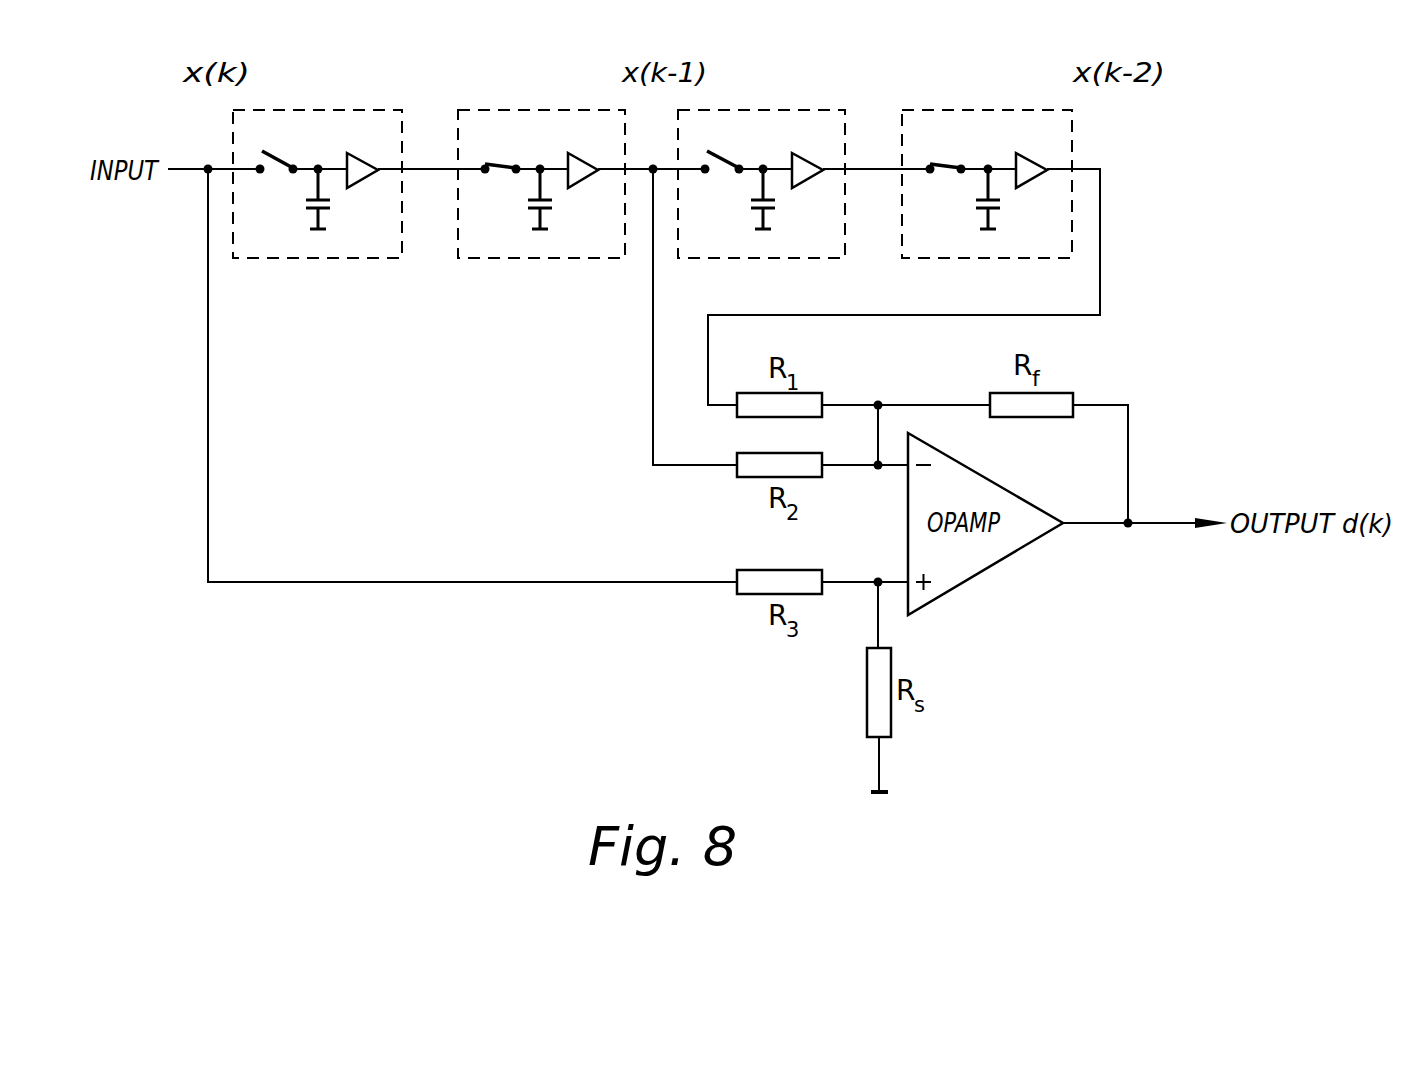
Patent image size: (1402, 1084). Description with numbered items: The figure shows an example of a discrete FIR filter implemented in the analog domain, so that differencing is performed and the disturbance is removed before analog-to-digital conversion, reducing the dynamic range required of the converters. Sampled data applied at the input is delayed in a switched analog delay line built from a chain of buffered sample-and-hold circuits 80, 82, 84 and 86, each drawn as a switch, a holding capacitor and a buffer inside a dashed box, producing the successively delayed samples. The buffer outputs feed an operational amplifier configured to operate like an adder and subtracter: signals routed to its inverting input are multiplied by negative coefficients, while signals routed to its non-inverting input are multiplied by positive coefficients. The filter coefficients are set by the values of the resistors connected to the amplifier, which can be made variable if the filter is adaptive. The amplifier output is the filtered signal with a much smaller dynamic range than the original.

The buffered sample-and-hold circuit 80 is at (323, 259).
The buffered sample-and-hold circuit 82 is at (530, 259).
The buffered sample-and-hold circuit 84 is at (773, 109).
The buffered sample-and-hold circuit 86 is at (992, 109).